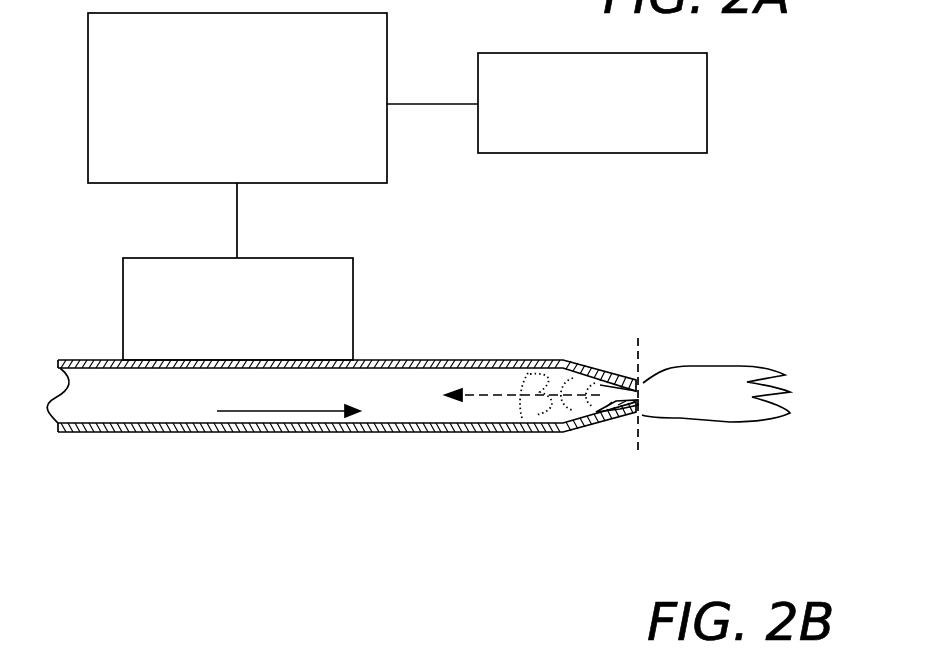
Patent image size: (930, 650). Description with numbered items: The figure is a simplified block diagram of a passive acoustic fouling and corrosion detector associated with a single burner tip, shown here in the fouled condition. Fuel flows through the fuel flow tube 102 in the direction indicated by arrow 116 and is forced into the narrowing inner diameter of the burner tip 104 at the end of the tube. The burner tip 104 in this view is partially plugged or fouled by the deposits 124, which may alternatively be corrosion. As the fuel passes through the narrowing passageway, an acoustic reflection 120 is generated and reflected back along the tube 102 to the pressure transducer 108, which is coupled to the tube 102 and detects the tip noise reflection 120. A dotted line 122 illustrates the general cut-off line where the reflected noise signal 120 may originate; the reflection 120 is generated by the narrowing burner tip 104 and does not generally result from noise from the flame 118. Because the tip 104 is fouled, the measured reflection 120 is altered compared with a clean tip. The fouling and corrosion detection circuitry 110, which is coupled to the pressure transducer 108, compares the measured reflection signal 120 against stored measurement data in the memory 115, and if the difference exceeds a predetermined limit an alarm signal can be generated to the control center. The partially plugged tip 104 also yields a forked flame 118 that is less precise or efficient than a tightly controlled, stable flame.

The fuel flow tube 102 is at (360, 433).
The burner tip 104 is at (606, 350).
The pressure transducer 108 is at (288, 258).
The fouling and corrosion detection circuitry 110 is at (387, 170).
The memory 115 is at (548, 53).
The arrow indicating fuel flow 116 is at (235, 411).
The flame 118 is at (700, 366).
The acoustic reflection 120 is at (522, 418).
The dotted line 122 is at (641, 432).
The deposits 124 is at (618, 414).